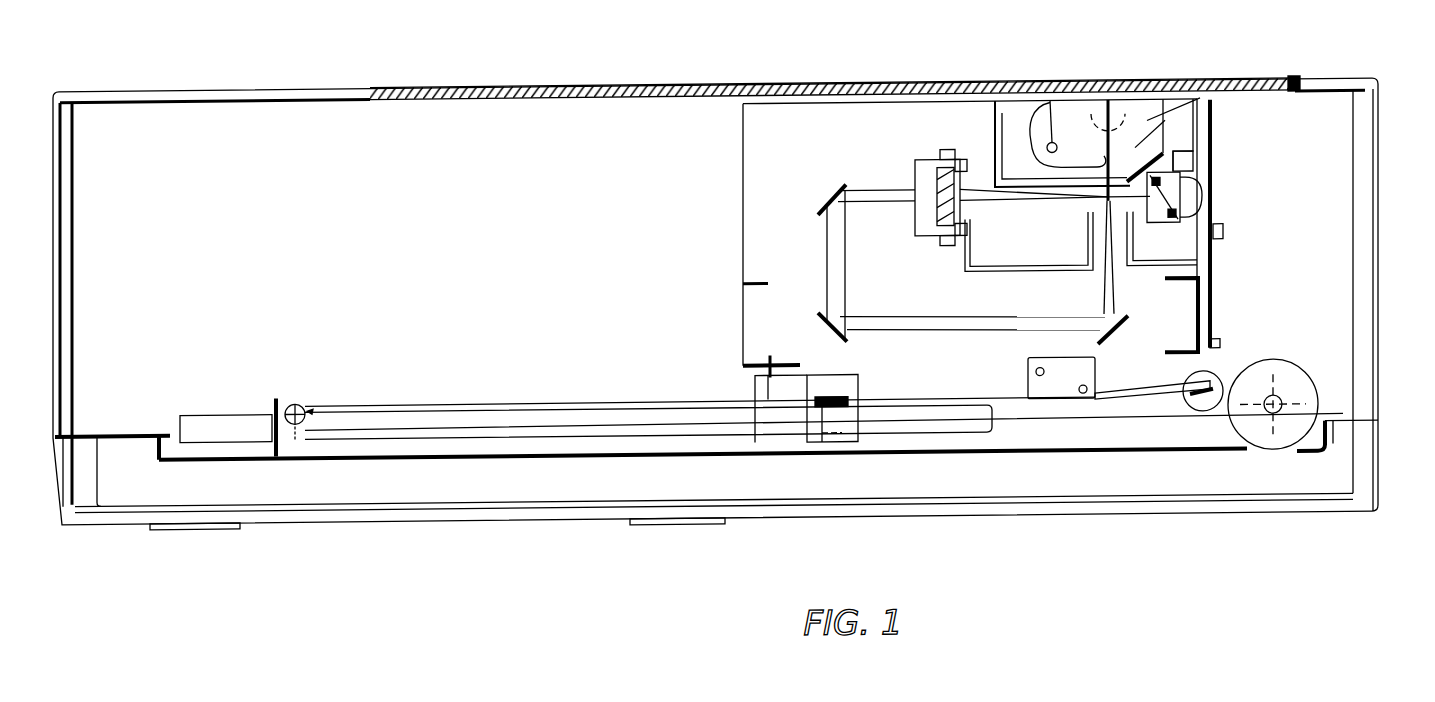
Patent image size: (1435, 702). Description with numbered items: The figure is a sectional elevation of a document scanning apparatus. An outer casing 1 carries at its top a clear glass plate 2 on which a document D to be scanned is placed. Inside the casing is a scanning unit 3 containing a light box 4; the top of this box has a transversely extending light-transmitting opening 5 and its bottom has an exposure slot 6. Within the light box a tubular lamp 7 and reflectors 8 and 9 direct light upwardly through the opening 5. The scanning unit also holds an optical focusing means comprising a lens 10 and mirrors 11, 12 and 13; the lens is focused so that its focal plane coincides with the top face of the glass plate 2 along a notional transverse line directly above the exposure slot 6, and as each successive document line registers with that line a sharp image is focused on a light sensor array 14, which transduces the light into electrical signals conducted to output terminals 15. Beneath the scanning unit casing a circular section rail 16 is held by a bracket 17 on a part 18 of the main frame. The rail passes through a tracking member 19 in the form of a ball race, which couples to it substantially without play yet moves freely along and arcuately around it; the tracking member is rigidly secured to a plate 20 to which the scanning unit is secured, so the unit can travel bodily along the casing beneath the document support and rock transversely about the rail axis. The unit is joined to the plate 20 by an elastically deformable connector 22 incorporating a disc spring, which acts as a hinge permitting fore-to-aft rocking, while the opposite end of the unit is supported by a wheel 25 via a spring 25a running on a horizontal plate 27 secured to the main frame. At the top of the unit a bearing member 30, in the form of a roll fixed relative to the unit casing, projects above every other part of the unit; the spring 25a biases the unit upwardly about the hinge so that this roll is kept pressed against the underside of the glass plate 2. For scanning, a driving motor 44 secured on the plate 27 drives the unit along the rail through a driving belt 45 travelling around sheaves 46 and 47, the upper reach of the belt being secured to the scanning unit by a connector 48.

The outer casing 1 is at (1378, 287).
The glass plate 2 is at (425, 84).
The document D is at (560, 84).
The scanning unit 3 is at (742, 176).
The light box 4 is at (997, 132).
The light-transmitting opening 5 is at (1108, 104).
The exposure slot 6 is at (1165, 125).
The tubular lamp 7 is at (1052, 105).
The reflector 8 is at (1047, 104).
The reflector 9 is at (1200, 103).
The lens 10 is at (935, 155).
The mirror 11 is at (827, 203).
The mirror 12 is at (826, 332).
The mirror 13 is at (1100, 348).
The light sensor array 14 is at (1165, 187).
The output terminals 15 is at (1222, 236).
The rail 16 is at (928, 432).
The bracket 17 is at (276, 398).
The part of the main frame 18 is at (226, 457).
The tracking member 19 is at (850, 444).
The plate 20 is at (762, 381).
The elastically deformable connector 22 is at (757, 372).
The wheel 25 is at (1203, 417).
The spring 25a is at (1150, 396).
The horizontal plate 27 is at (133, 436).
The bearing member 30 is at (1128, 123).
The driving motor 44 is at (1292, 440).
The driving belt 45 is at (392, 405).
The sheave 46 is at (1275, 420).
The sheave 47 is at (296, 400).
The connector 48 is at (822, 408).